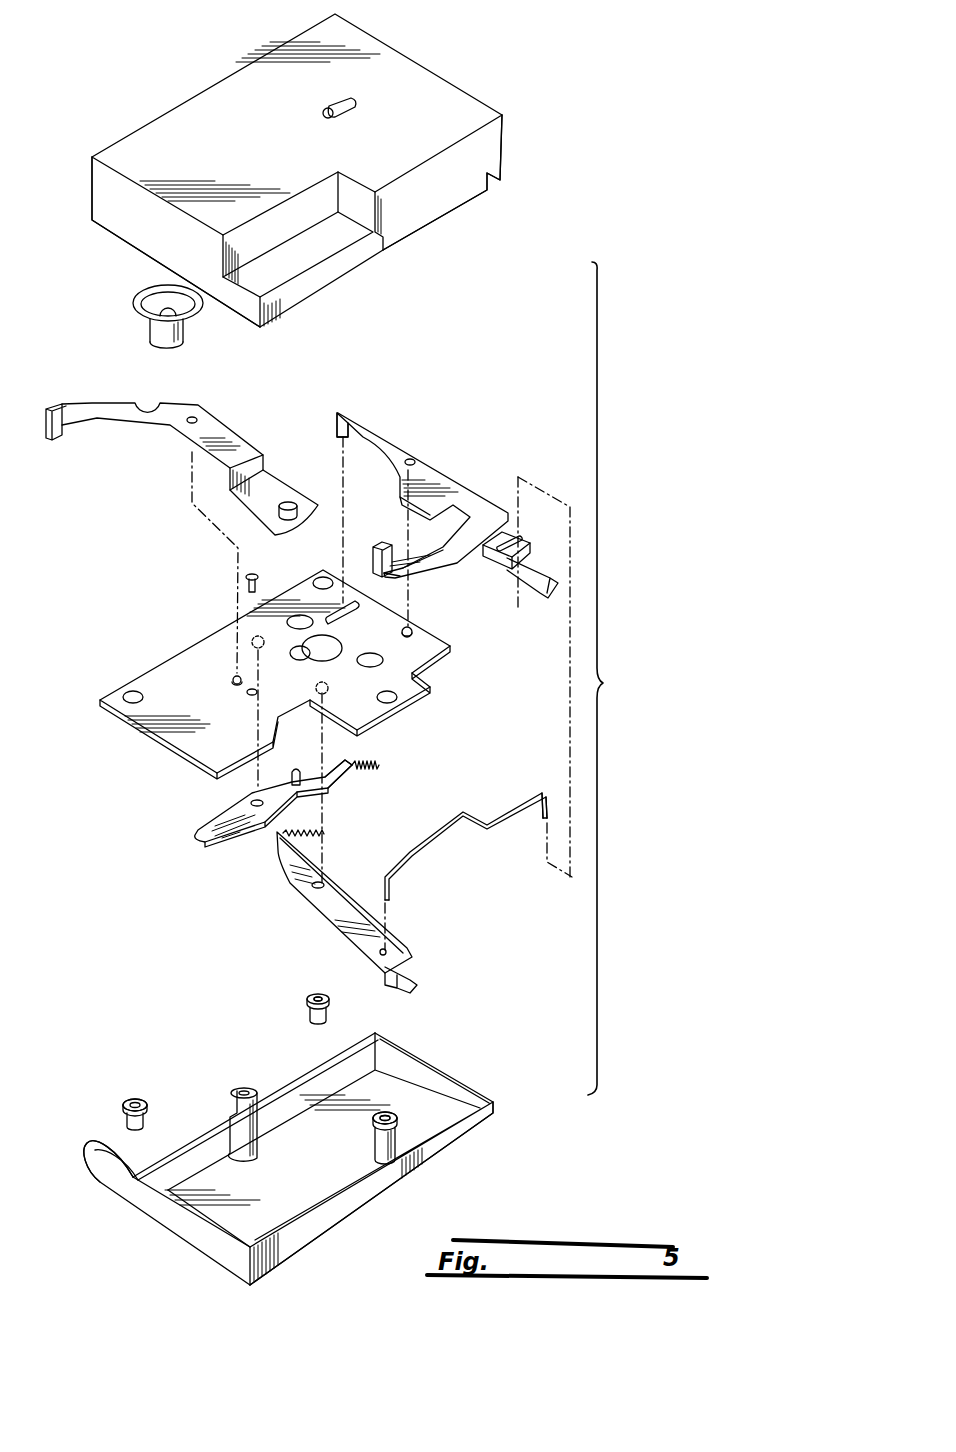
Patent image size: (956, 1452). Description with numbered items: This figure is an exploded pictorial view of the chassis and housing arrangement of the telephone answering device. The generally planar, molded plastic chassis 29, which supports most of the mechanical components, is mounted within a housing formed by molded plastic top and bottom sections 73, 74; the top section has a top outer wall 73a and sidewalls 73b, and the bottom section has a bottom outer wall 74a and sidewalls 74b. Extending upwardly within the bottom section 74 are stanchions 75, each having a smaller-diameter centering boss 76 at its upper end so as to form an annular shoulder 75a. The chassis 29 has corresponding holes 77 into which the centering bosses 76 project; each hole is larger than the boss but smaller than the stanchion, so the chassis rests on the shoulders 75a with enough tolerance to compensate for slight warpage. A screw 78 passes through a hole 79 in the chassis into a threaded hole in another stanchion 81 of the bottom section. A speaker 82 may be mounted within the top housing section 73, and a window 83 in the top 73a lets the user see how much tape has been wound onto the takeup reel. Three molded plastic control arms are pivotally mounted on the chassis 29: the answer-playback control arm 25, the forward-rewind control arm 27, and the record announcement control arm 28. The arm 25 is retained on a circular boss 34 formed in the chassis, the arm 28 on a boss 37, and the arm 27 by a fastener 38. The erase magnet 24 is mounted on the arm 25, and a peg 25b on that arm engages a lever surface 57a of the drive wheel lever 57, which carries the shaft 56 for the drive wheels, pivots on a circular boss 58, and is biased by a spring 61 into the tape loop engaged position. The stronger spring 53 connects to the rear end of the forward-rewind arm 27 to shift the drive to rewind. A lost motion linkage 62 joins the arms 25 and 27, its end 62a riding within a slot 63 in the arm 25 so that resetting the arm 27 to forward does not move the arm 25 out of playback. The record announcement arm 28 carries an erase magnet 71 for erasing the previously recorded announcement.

The top housing section 73 is at (468, 100).
The top outer wall 73a is at (136, 140).
The sidewalls 73b is at (497, 148).
The window 83 is at (332, 113).
The speaker 82 is at (133, 308).
The erase magnet 71 is at (47, 406).
The record announcement control arm 28 is at (191, 405).
The peg 25b is at (328, 435).
The answer-playback control arm 25 is at (471, 487).
The erase magnet 24 is at (378, 543).
The slot 63 is at (502, 558).
The chassis 29 is at (144, 671).
The holes 77 is at (392, 705).
The circular boss 34 is at (420, 632).
The circular boss 58 is at (250, 643).
The fastener 38 is at (329, 688).
The boss 37 is at (222, 676).
The hole 79 is at (248, 696).
The screw 78 is at (243, 582).
The drive wheel lever 57 is at (200, 816).
The lever surface 57a is at (330, 788).
The shaft 56 is at (297, 770).
The spring 61 is at (376, 767).
The spring 53 is at (323, 833).
The lost motion linkage 62 is at (487, 829).
The linkage end 62a is at (548, 804).
The forward-rewind control arm 27 is at (393, 942).
The bottom housing section 74 is at (499, 1138).
The bottom outer wall 74a is at (270, 1213).
The sidewalls 74b is at (453, 1145).
The stanchion 81 is at (248, 1137).
The stanchions 75 is at (302, 1012).
The annular shoulder 75a is at (130, 1099).
The centering boss 76 is at (316, 994).